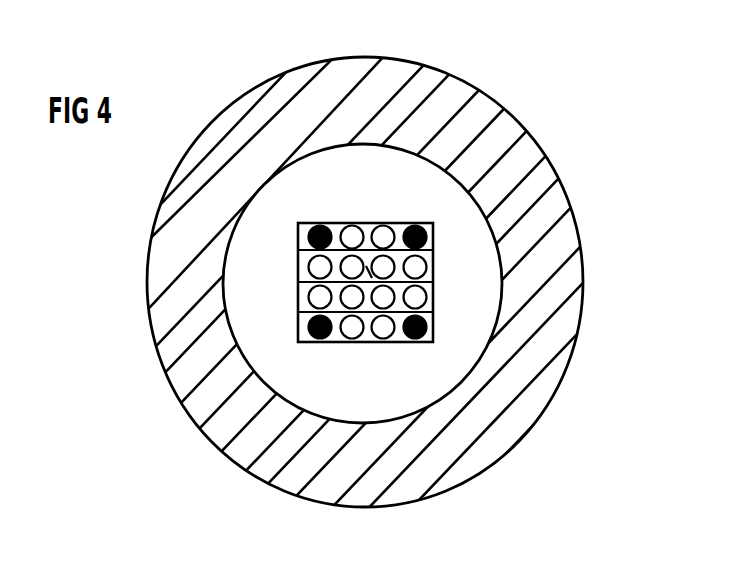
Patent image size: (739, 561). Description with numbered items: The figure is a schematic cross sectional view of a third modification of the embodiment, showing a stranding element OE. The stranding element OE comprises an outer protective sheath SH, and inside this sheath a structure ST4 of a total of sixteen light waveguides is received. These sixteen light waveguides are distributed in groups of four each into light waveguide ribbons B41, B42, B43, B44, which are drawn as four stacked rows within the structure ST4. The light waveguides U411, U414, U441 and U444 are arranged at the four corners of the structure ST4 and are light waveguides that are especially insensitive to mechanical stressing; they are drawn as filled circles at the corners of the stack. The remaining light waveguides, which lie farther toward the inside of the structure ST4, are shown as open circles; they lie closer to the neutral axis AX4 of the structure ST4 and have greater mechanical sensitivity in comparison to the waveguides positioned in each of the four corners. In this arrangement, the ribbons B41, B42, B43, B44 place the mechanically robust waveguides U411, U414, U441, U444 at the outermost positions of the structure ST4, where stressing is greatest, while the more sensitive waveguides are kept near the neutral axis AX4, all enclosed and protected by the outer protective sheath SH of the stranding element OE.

The stranding element OE is at (512, 92).
The outer protective sheath SH is at (557, 178).
The structure ST4 is at (291, 291).
The light waveguide ribbon B41 is at (464, 205).
The light waveguide ribbon B42 is at (433, 268).
The light waveguide ribbon B43 is at (433, 298).
The light waveguide ribbon B44 is at (462, 352).
The light waveguide U411 is at (321, 225).
The light waveguide U414 is at (417, 224).
The light waveguide U441 is at (320, 340).
The light waveguide U444 is at (417, 340).
The neutral axis AX4 is at (369, 272).